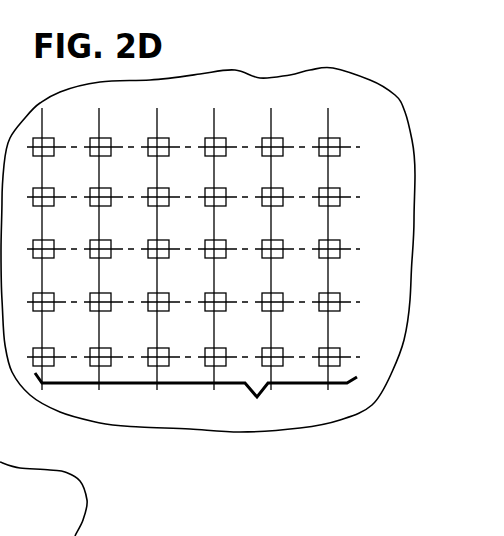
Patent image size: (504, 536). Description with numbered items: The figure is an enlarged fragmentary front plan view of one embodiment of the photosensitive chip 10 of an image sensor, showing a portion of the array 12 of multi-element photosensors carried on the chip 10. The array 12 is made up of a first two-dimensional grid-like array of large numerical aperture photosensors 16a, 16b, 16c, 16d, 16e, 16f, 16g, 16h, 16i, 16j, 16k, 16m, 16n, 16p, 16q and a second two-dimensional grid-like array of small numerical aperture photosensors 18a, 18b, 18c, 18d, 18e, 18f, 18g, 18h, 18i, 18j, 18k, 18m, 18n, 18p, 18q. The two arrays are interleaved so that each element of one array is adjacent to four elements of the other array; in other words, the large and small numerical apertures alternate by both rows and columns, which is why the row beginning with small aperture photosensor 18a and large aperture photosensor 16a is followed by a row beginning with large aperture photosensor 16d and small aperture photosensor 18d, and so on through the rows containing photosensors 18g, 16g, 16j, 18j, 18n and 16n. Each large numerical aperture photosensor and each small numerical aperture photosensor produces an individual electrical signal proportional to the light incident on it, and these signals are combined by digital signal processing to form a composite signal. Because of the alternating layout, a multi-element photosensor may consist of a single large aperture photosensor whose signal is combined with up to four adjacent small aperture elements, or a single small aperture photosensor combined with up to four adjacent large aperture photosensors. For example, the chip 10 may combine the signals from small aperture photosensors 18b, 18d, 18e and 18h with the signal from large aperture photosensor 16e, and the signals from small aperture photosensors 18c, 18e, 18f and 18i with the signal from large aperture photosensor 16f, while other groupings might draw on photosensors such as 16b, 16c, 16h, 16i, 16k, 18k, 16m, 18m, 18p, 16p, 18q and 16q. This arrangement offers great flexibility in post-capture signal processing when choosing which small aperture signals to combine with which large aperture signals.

The photosensitive chip 10 is at (333, 67).
The array of multi-element photosensors 12 is at (257, 398).
The small numerical aperture photosensor 18a is at (64, 129).
The large numerical aperture photosensor 16a is at (121, 129).
The small numerical aperture photosensor 18b is at (179, 129).
The large numerical aperture photosensor 16b is at (236, 129).
The small numerical aperture photosensor 18c is at (293, 129).
The large numerical aperture photosensor 16c is at (350, 129).
The large numerical aperture photosensor 16d is at (64, 179).
The small numerical aperture photosensor 18d is at (121, 179).
The large numerical aperture photosensor 16e is at (179, 179).
The small numerical aperture photosensor 18e is at (236, 179).
The large numerical aperture photosensor 16f is at (293, 179).
The small numerical aperture photosensor 18f is at (350, 179).
The small numerical aperture photosensor 18g is at (64, 231).
The large numerical aperture photosensor 16g is at (121, 231).
The small numerical aperture photosensor 18h is at (179, 231).
The large numerical aperture photosensor 16h is at (236, 231).
The small numerical aperture photosensor 18i is at (293, 231).
The large numerical aperture photosensor 16i is at (350, 231).
The large numerical aperture photosensor 16j is at (64, 284).
The small numerical aperture photosensor 18j is at (121, 284).
The large numerical aperture photosensor 16k is at (179, 284).
The small numerical aperture photosensor 18k is at (236, 284).
The large numerical aperture photosensor 16m is at (293, 284).
The small numerical aperture photosensor 18m is at (350, 284).
The small numerical aperture photosensor 18n is at (64, 339).
The large numerical aperture photosensor 16n is at (121, 339).
The small numerical aperture photosensor 18p is at (179, 339).
The large numerical aperture photosensor 16p is at (236, 339).
The small numerical aperture photosensor 18q is at (293, 339).
The large numerical aperture photosensor 16q is at (350, 339).